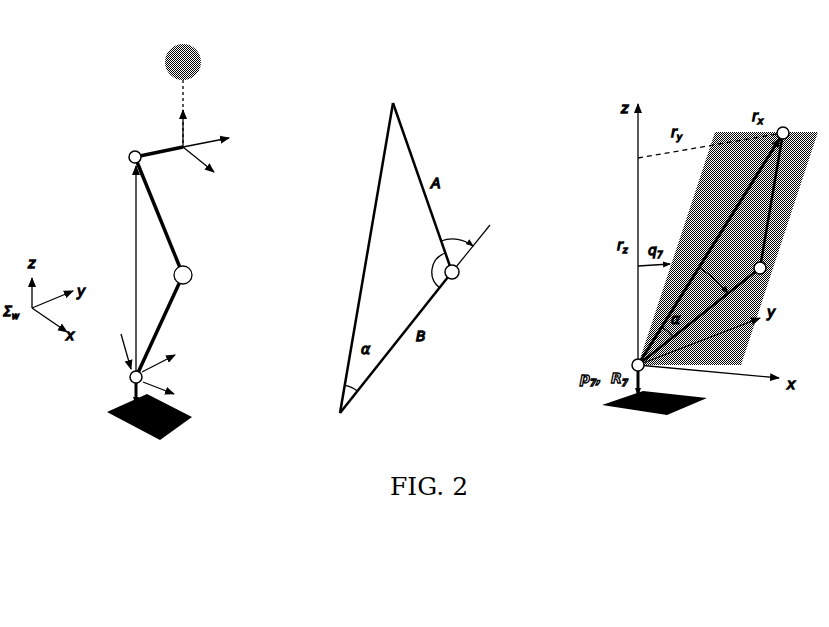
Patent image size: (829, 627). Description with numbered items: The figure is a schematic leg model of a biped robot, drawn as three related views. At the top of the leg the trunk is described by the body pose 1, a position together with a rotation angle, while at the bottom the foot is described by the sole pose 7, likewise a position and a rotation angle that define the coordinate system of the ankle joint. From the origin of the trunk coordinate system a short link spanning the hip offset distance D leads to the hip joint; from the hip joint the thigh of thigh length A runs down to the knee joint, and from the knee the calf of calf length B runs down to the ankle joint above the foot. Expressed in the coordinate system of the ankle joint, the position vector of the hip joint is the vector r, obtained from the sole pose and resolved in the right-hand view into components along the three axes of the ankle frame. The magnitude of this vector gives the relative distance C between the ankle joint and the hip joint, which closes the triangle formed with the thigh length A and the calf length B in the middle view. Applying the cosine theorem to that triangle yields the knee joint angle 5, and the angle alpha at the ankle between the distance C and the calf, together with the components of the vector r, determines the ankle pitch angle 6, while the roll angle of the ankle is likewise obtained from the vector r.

The body pose 1 is at (220, 141).
The sole pose 7 is at (133, 387).
The thigh length A is at (160, 216).
The calf length B is at (159, 326).
The relative distance between ankle joint and hip joint C is at (366, 258).
The distance from trunk origin to hip joint D is at (146, 145).
The position vector of the hip joint r is at (128, 271).
The knee joint angle 5 is at (428, 250).
The pitch angle of the ankle joint 6 is at (715, 276).